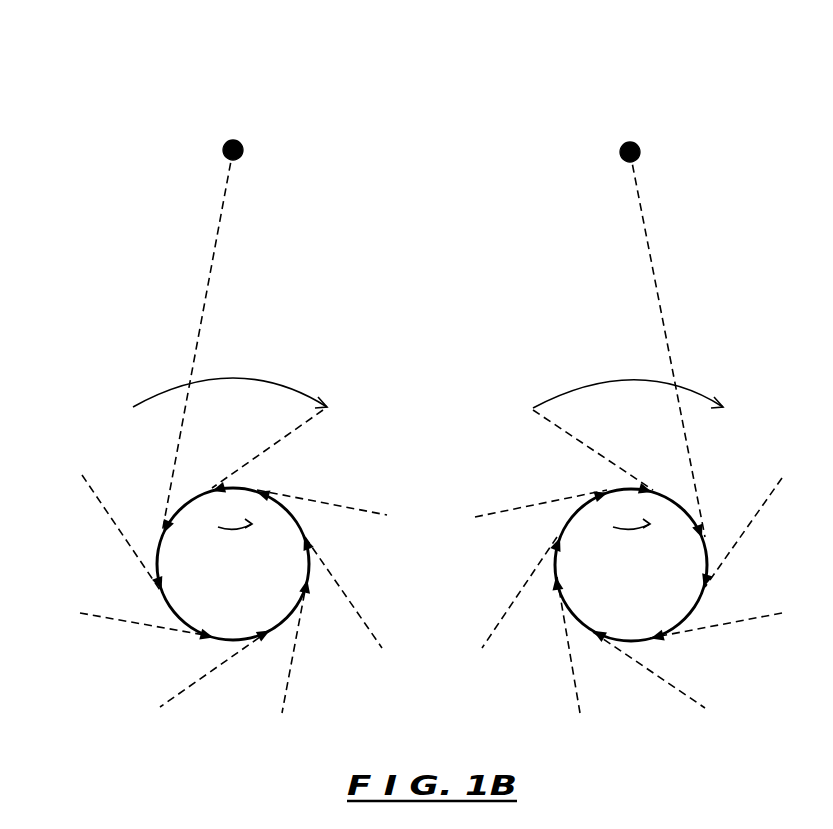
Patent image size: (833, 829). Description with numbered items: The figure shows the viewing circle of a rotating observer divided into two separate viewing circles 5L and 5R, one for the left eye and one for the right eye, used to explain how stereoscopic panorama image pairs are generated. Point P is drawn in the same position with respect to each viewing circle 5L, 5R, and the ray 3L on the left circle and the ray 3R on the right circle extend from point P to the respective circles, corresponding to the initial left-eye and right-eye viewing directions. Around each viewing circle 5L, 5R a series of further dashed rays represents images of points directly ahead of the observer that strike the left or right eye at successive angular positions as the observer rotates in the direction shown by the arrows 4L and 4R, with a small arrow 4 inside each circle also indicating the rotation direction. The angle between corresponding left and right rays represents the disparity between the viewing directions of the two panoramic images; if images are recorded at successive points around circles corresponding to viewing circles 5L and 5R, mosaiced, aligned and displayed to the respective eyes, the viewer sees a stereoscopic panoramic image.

The point P is at (244, 148).
The ray 3L is at (193, 323).
The ray 3R is at (667, 331).
The arrow 4L is at (278, 385).
The arrow 4R is at (688, 389).
The arrow 4 is at (216, 523).
The viewing circle 5L is at (171, 603).
The viewing circle 5R is at (563, 602).